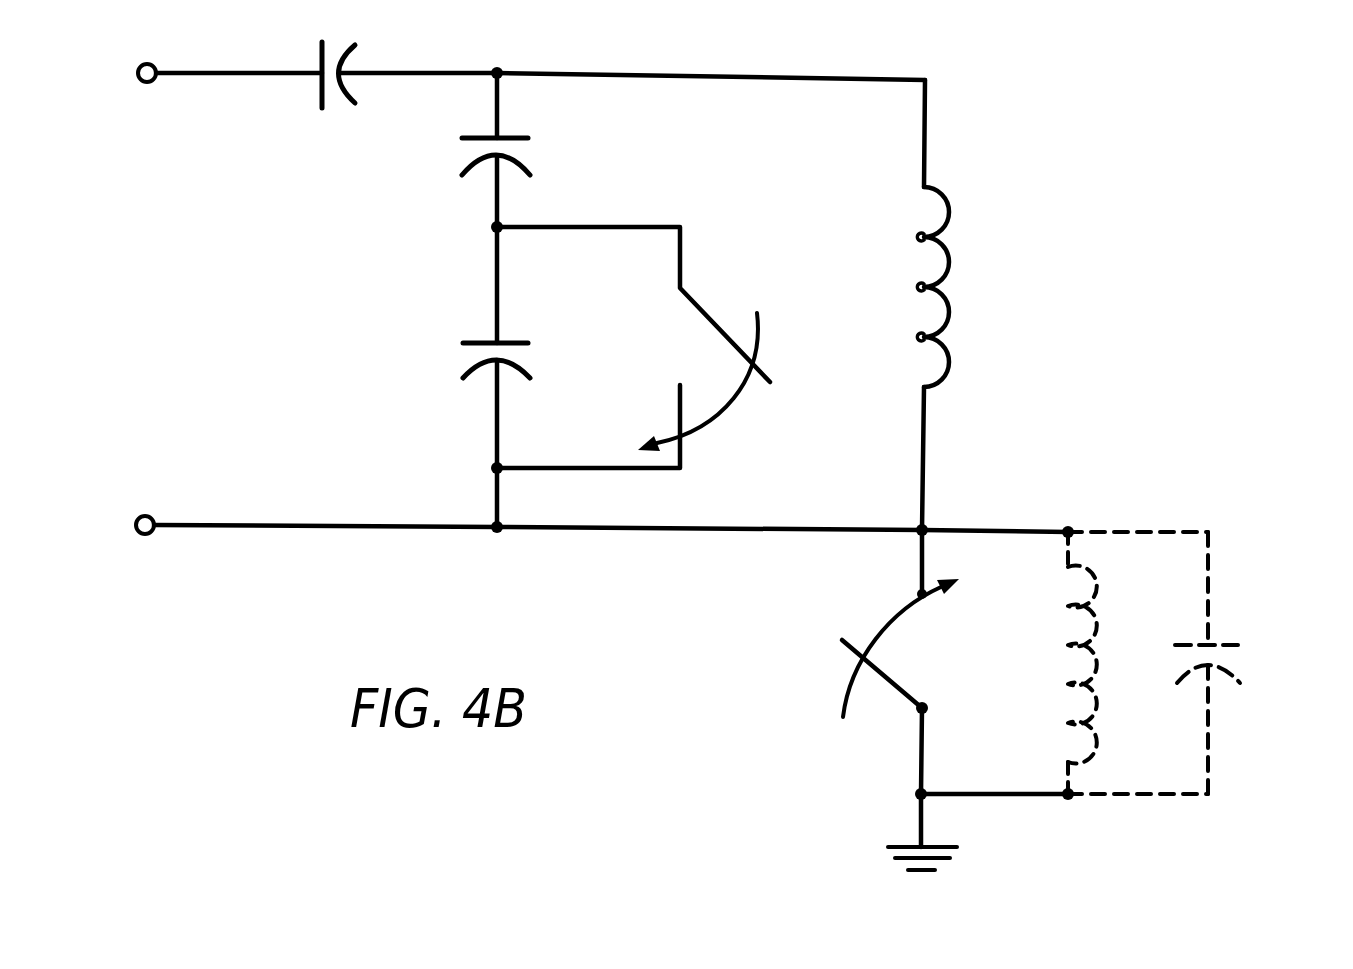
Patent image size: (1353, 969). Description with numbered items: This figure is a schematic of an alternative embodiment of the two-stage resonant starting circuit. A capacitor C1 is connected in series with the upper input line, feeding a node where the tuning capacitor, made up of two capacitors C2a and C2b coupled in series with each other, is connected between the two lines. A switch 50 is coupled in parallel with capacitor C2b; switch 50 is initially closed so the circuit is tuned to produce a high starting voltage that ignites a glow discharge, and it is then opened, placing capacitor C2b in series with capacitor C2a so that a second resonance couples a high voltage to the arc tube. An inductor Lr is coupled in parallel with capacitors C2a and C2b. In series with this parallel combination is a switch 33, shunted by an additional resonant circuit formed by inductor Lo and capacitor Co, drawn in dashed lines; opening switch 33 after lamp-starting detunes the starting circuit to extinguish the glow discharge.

The switch 50 is at (711, 312).
The switch 33 is at (903, 684).
The capacitor C1 is at (339, 107).
The capacitor C2a is at (526, 157).
The capacitor C2b is at (527, 355).
The inductor Lr is at (950, 305).
The inductor Lo is at (1103, 663).
The capacitor Co is at (1174, 663).